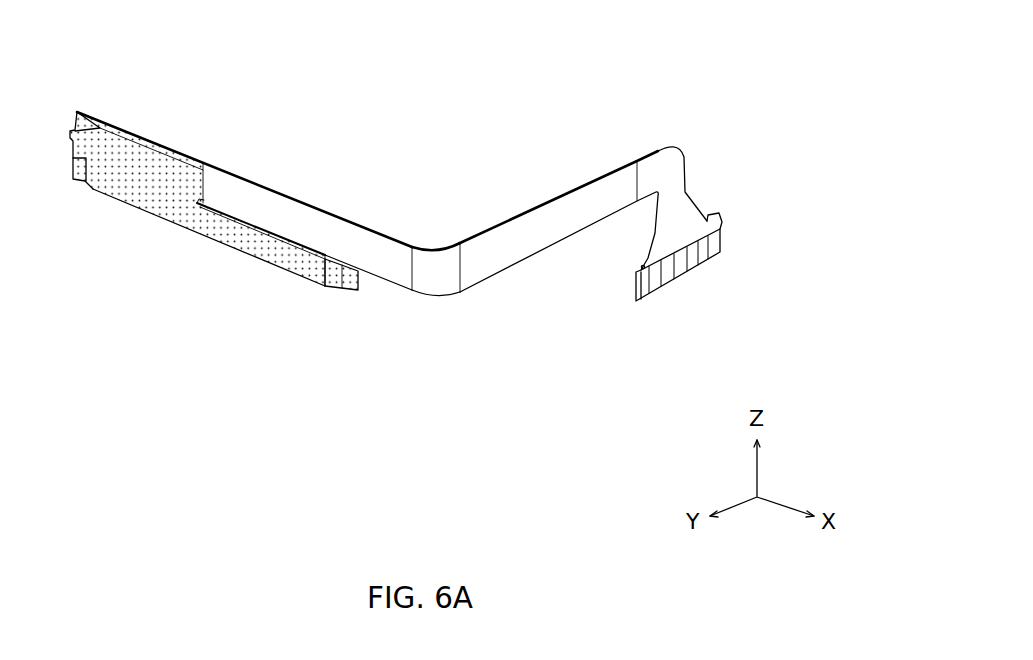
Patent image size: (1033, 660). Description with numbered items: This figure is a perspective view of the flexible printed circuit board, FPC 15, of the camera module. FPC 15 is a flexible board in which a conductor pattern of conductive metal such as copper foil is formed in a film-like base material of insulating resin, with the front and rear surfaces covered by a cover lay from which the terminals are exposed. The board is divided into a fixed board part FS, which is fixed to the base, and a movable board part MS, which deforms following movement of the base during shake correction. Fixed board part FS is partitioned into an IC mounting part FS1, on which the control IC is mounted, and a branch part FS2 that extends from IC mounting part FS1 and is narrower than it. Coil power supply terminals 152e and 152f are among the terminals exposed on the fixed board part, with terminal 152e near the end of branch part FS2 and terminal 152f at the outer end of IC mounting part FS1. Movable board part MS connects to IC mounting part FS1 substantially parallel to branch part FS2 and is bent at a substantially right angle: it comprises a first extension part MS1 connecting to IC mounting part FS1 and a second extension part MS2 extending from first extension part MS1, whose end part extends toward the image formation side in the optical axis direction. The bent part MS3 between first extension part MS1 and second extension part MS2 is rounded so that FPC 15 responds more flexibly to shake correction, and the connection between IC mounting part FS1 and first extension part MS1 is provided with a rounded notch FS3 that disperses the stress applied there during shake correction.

The FPC 15 is at (425, 193).
The fixed board part FS is at (195, 219).
The IC mounting part FS1 is at (146, 149).
The branch part FS2 is at (237, 247).
The notch FS3 is at (201, 200).
The movable board part MS is at (447, 234).
The first extension part MS1 is at (306, 208).
The second extension part MS2 is at (507, 239).
The bent part MS3 is at (437, 289).
The coil power supply terminal 152e is at (337, 287).
The coil power supply terminal 152f is at (86, 182).